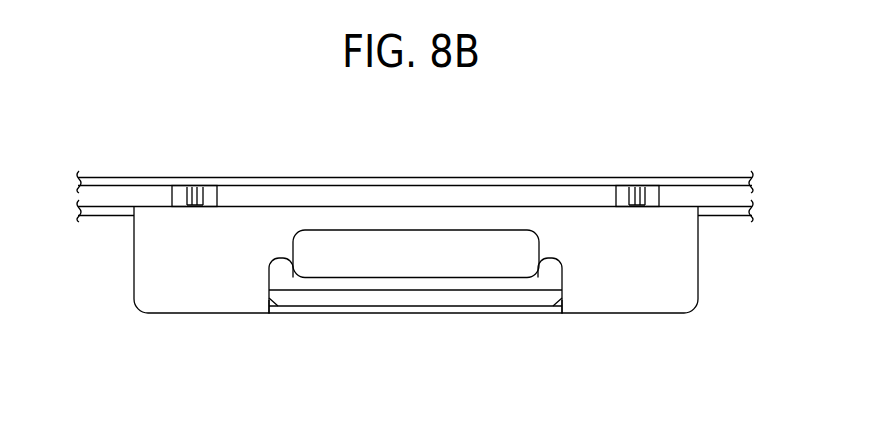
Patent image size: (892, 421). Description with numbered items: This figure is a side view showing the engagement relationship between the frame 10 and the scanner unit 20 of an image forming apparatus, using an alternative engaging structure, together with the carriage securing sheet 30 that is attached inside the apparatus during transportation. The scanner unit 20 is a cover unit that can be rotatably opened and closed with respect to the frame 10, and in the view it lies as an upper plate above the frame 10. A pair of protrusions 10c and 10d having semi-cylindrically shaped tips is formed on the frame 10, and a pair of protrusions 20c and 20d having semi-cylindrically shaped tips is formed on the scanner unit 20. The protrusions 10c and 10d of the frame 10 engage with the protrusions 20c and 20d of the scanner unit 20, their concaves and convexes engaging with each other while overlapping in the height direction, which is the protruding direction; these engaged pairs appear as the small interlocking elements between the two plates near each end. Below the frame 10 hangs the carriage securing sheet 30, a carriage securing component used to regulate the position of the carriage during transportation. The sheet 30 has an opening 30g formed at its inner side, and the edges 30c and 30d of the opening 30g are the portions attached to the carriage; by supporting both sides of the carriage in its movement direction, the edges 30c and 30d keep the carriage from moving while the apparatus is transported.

The frame 10 is at (718, 215).
The scanner unit 20 is at (710, 177).
The carriage securing sheet 30 is at (645, 303).
The protrusion 10c is at (648, 192).
The protrusion 10d is at (182, 189).
The protrusion 20c is at (623, 187).
The protrusion 20d is at (212, 186).
The edge of opening 30c is at (557, 305).
The edge of opening 30d is at (273, 304).
The opening 30g is at (401, 325).